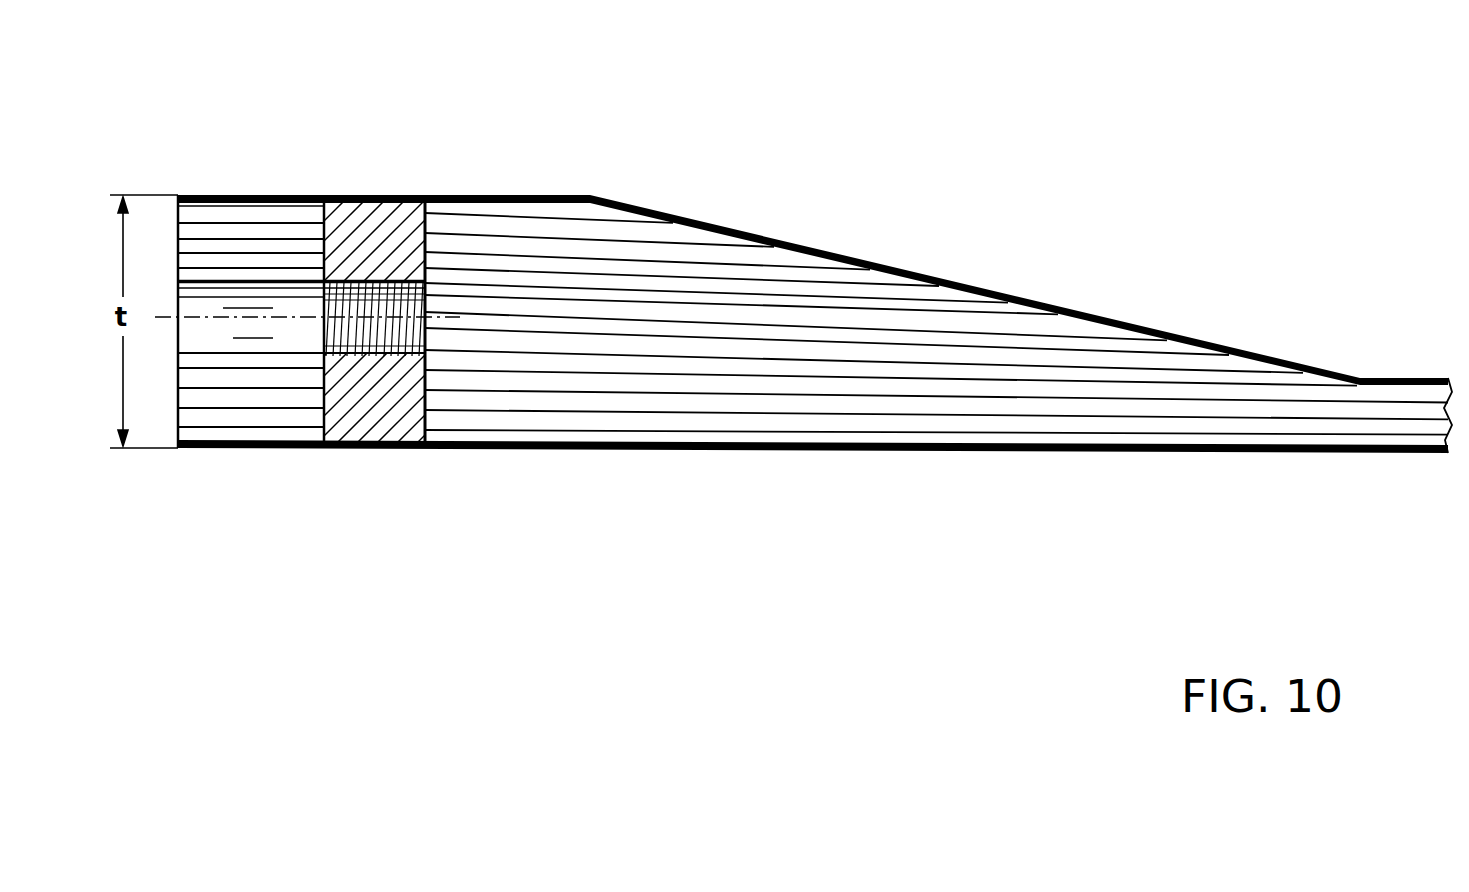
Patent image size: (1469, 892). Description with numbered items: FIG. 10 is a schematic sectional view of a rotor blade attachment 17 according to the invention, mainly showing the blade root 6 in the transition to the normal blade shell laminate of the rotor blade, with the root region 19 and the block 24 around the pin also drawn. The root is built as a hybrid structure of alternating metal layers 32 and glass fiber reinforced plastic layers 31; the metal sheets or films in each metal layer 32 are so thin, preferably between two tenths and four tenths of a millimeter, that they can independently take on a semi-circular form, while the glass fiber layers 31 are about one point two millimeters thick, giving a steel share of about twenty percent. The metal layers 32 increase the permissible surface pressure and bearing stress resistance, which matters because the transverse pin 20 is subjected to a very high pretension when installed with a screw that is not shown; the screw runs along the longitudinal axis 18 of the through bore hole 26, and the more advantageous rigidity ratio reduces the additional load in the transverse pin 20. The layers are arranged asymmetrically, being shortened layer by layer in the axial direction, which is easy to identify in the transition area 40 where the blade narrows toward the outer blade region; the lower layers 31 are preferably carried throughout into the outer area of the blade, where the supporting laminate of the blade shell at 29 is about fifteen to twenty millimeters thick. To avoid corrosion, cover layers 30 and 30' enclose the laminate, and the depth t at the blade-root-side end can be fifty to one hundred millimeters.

The blade root 6 is at (324, 161).
The rotor blade attachment 17 is at (446, 146).
The root section 19 is at (177, 250).
The longitudinal axis 18 is at (302, 318).
The transverse pin 20 is at (397, 420).
The bulkhead block 24 is at (380, 348).
The through bore hole 26 is at (218, 338).
The supporting laminate of the blade shell 29 is at (1430, 428).
The cover layer 30 is at (813, 290).
The cover layer 30' is at (813, 482).
The glass fiber reinforced plastic layer 31 is at (247, 218).
The metal layer 32 is at (218, 222).
The transition area 40 is at (919, 220).